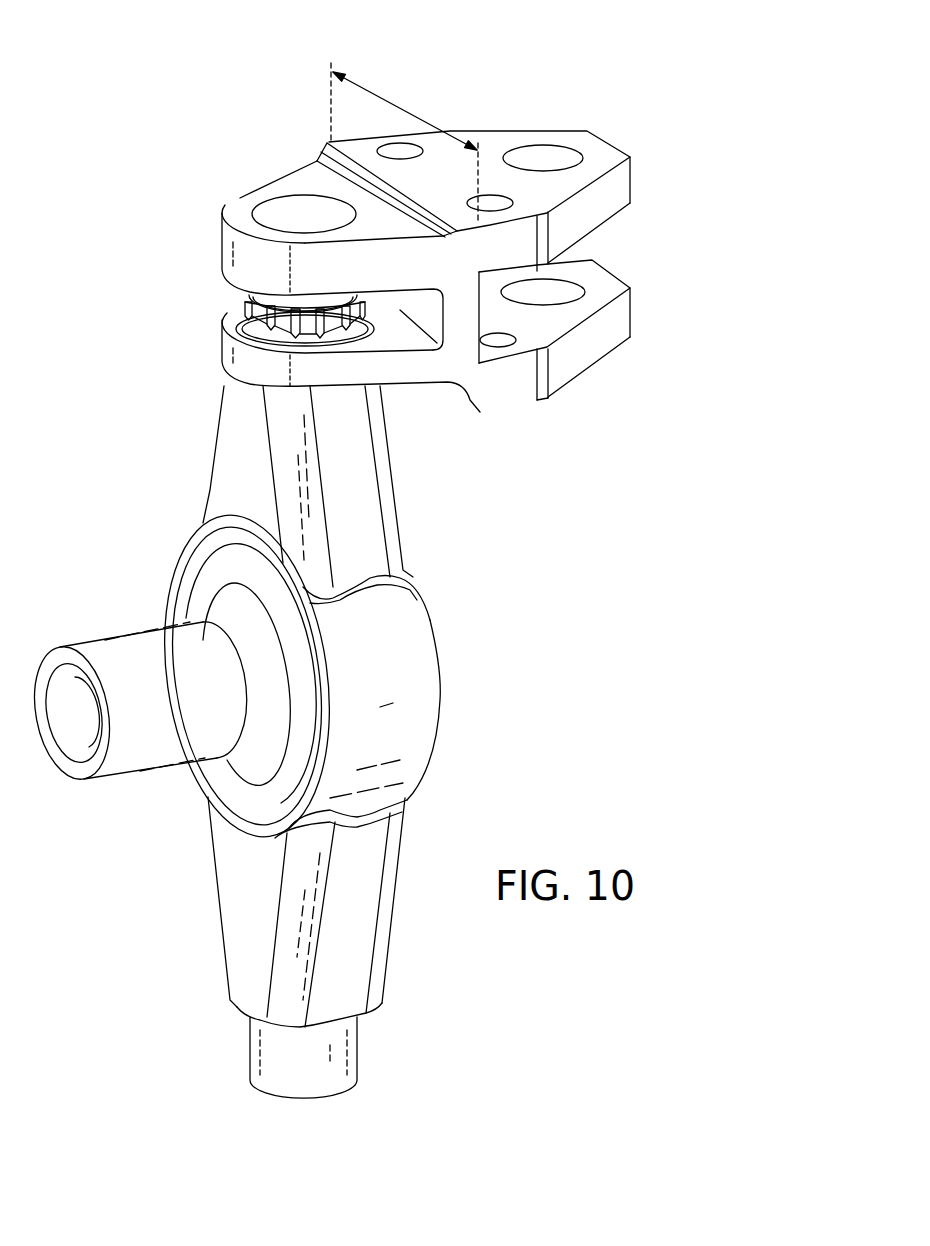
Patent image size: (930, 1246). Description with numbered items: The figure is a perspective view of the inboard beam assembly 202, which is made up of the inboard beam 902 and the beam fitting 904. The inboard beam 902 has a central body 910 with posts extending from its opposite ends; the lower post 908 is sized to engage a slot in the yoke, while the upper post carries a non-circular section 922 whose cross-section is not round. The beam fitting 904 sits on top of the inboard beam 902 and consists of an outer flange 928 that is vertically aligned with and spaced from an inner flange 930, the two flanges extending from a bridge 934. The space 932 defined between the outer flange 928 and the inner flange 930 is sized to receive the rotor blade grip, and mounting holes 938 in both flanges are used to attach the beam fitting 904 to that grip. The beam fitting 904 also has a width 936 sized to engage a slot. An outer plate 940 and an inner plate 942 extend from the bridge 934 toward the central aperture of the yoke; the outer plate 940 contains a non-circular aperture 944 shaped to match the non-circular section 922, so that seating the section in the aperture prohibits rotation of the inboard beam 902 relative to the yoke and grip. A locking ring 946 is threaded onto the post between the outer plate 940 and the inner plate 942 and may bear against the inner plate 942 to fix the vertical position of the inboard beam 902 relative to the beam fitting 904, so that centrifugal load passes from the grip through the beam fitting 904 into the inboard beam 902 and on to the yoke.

The inboard beam assembly 202 is at (92, 106).
The inboard beam 902 is at (515, 497).
The beam fitting 904 is at (473, 66).
The post 908 is at (358, 1047).
The body 910 is at (441, 732).
The non-circular section 922 is at (270, 213).
The outer flange 928 is at (633, 178).
The inner flange 930 is at (633, 314).
The space 932 is at (640, 230).
The bridge 934 is at (483, 313).
The width 936 is at (401, 109).
The mounting holes 938 is at (400, 155).
The outer plate 940 is at (219, 243).
The inner plate 942 is at (222, 344).
The non-circular aperture 944 is at (257, 207).
The locking ring 946 is at (242, 310).